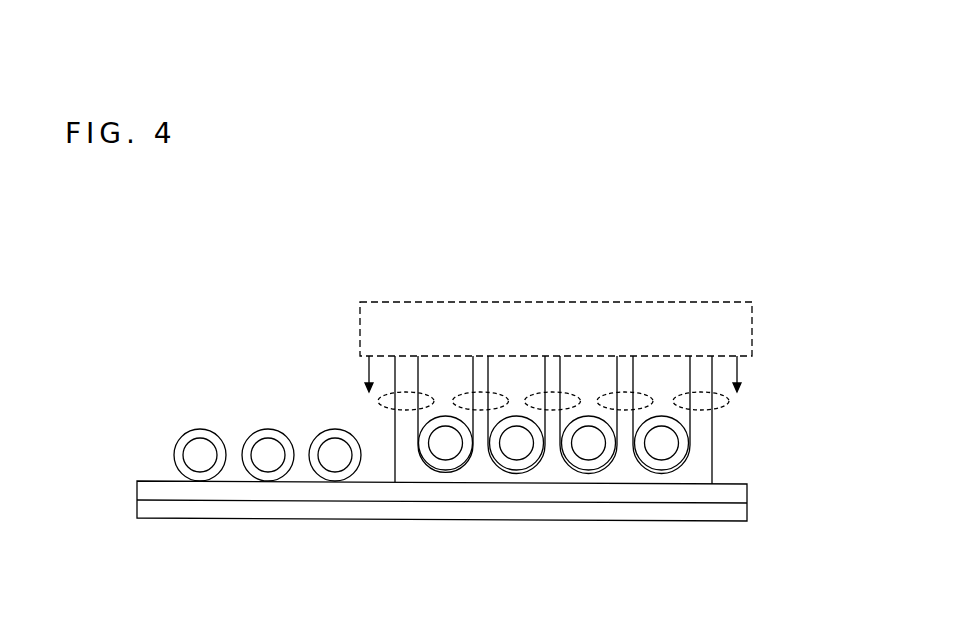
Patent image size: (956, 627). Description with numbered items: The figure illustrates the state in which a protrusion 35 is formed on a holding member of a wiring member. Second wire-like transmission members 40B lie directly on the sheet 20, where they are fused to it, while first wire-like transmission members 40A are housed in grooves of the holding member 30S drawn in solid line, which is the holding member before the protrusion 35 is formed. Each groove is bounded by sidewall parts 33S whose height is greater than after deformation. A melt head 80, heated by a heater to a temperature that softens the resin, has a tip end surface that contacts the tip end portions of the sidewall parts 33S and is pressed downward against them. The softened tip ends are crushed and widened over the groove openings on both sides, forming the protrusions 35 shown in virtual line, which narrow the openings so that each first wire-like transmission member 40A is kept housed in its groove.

The melt head 80 is at (683, 298).
The protrusion 35 is at (424, 406).
The sidewall part before formation of the protrusion 33S is at (560, 385).
The second wire-like transmission member 40B is at (247, 437).
The first wire-like transmission member 40A is at (495, 456).
The holding member before formation of the protrusion 30S is at (713, 469).
The sheet 20 is at (698, 523).